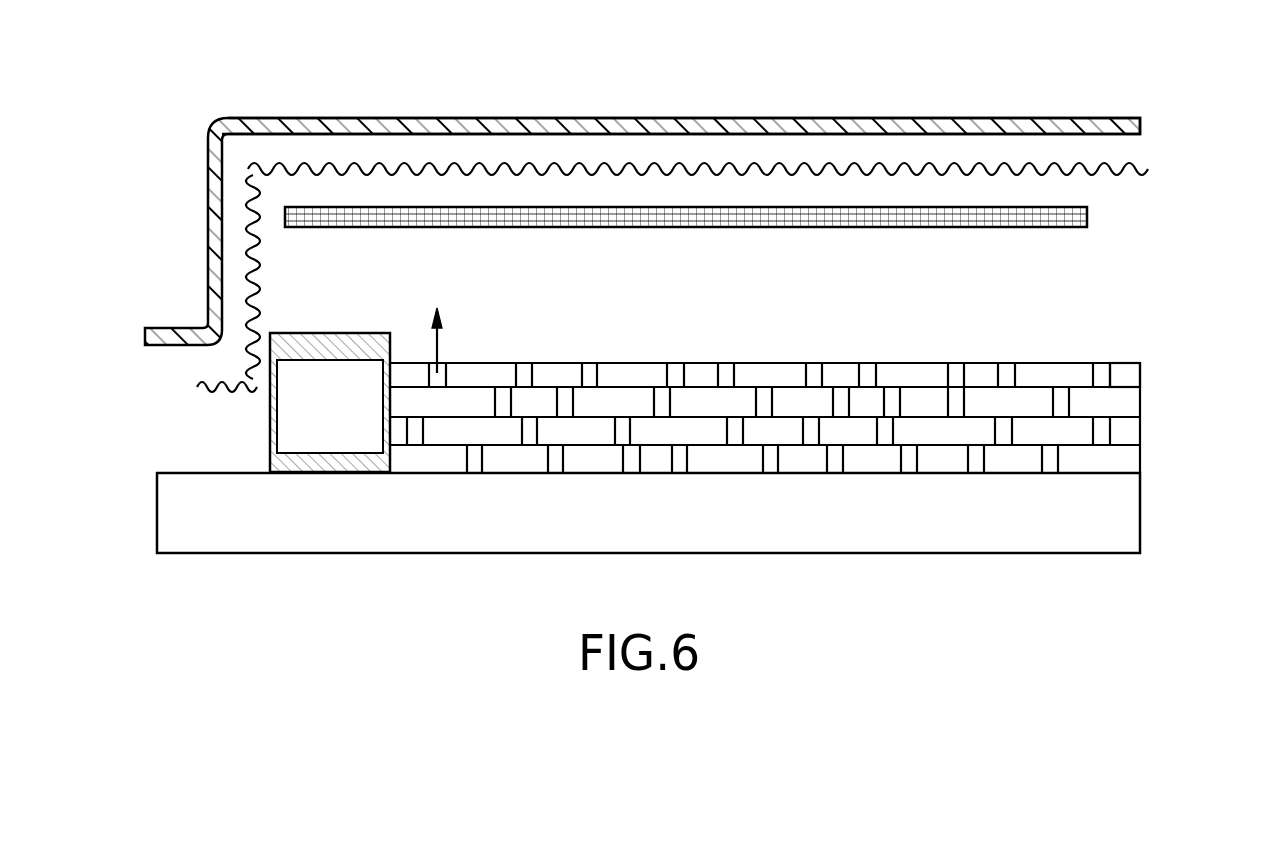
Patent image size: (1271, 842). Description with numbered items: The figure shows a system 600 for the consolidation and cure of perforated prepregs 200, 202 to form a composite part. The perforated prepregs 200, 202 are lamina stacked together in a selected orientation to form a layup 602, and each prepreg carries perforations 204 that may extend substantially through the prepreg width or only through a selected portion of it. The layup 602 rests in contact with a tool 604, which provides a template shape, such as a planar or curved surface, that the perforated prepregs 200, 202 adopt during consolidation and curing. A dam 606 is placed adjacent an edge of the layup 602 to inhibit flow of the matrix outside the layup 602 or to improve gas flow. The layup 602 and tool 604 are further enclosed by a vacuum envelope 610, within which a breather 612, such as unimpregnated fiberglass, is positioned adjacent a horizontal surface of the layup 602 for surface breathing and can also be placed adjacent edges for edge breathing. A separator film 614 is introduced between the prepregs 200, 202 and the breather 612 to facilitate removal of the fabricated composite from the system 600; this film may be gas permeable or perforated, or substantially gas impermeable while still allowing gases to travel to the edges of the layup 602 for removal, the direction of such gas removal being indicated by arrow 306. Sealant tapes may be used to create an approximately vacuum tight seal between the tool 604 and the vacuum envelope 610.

The system 600 is at (175, 158).
The vacuum envelope 610 is at (405, 125).
The breather 612 is at (1137, 170).
The separator film 614 is at (1072, 217).
The dam 606 is at (350, 417).
The tool 604 is at (668, 523).
The layup 602 is at (1153, 360).
The fully impregnated prepreg 200 is at (1122, 375).
The partially impregnated prepreg 202 is at (1183, 336).
The perforation 204 is at (866, 373).
The flow direction arrow 306 is at (424, 323).